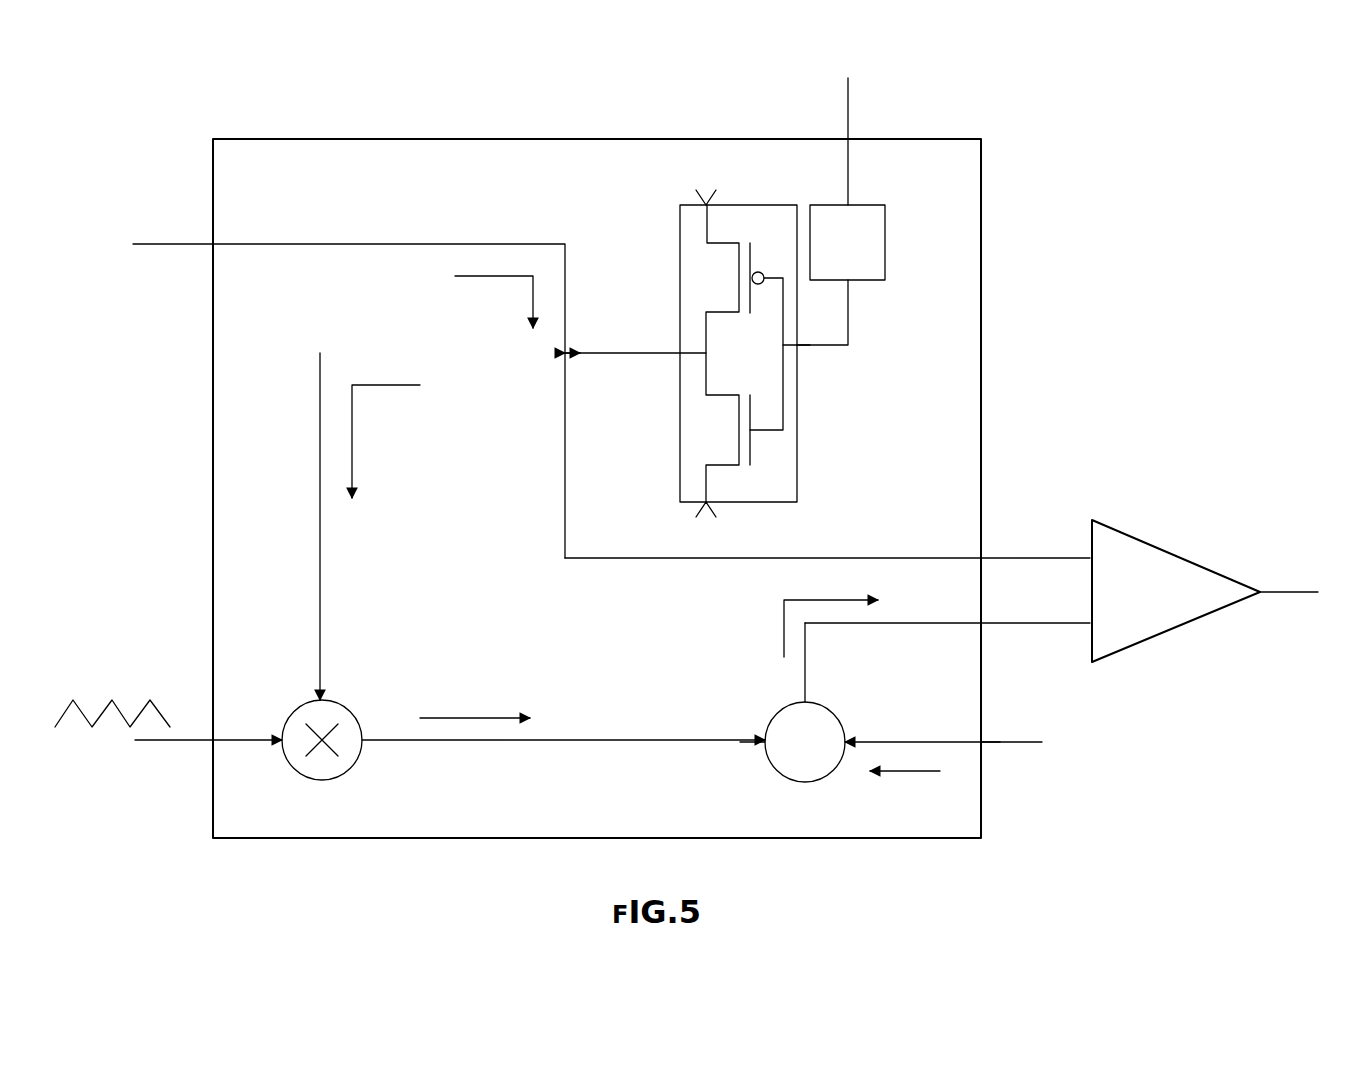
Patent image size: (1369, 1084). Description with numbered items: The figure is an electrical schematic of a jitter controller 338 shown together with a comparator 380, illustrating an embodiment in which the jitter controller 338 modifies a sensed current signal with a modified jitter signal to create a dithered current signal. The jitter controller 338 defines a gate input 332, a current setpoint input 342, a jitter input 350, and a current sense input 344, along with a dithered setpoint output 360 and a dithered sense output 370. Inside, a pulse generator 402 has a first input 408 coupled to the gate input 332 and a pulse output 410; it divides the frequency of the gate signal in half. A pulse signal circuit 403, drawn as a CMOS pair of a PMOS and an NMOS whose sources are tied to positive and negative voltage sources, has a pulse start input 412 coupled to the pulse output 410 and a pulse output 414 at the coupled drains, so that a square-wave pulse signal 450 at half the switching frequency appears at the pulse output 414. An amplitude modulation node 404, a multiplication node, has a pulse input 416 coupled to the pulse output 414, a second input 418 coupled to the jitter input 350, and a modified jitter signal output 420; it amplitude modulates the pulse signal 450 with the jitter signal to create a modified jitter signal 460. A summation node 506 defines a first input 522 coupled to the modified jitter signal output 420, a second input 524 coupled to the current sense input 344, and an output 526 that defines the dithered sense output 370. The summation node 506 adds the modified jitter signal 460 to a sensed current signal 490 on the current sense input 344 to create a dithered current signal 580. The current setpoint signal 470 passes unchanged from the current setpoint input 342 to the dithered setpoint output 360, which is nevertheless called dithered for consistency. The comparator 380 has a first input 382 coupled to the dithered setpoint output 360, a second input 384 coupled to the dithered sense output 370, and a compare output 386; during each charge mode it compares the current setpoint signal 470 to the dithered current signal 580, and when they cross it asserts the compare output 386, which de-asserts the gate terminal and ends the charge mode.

The jitter controller 338 is at (410, 212).
The gate input 332 is at (851, 137).
The first input 408 is at (850, 205).
The pulse generator 402 is at (886, 250).
The pulse output 410 is at (851, 285).
The pulse signal circuit 403 is at (799, 408).
The pulse start input 412 is at (800, 348).
The pulse output 414 is at (680, 353).
The current setpoint signal 470 is at (500, 276).
The pulse signal 450 is at (352, 418).
The current setpoint input 342 is at (213, 250).
The pulse input 416 is at (322, 700).
The amplitude modulation node 404 is at (360, 722).
The jitter input 350 is at (213, 745).
The second input 418 is at (280, 745).
The modified jitter signal output 420 is at (360, 748).
The modified jitter signal 460 is at (485, 718).
The summation node 506 is at (775, 715).
The first input 522 is at (768, 752).
The second input 524 is at (848, 735).
The current sense input 344 is at (983, 745).
The output 526 is at (808, 702).
The dithered current signal 580 is at (784, 630).
The sensed current signal 490 is at (900, 771).
The dithered sense output 370 is at (983, 626).
The dithered setpoint output 360 is at (983, 558).
The comparator 380 is at (1170, 570).
The first input 382 is at (1090, 558).
The second input 384 is at (1090, 628).
The compare output 386 is at (1262, 588).